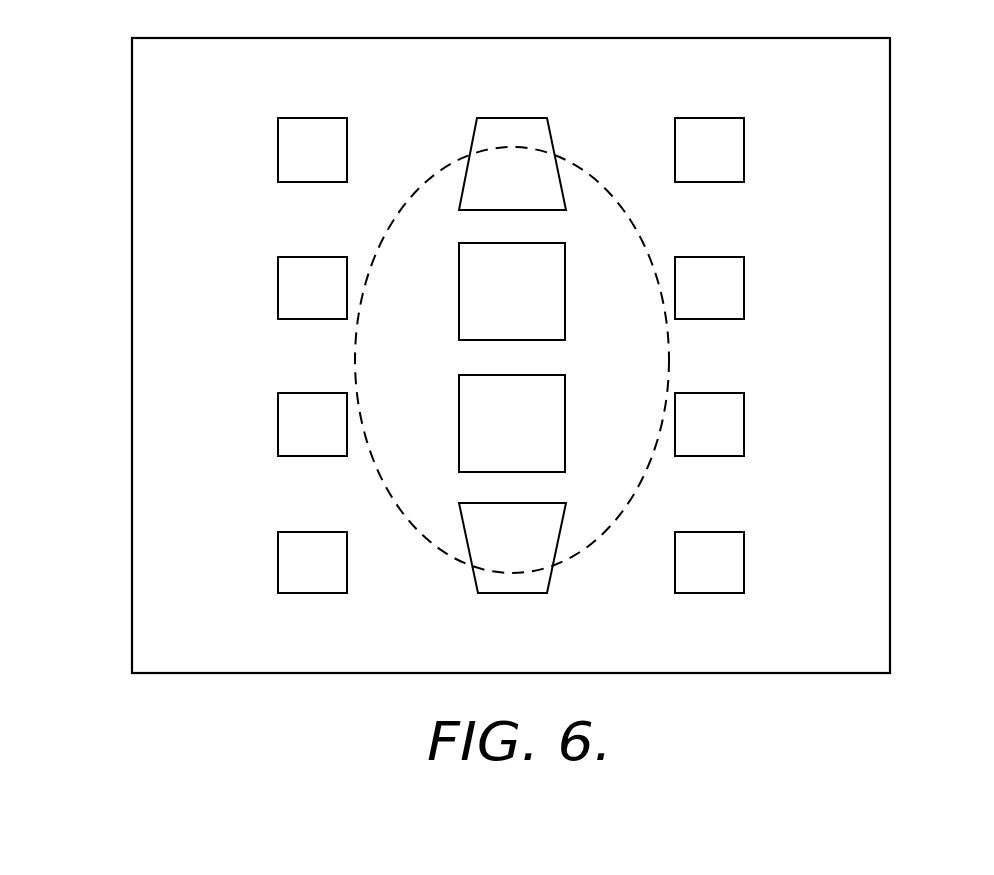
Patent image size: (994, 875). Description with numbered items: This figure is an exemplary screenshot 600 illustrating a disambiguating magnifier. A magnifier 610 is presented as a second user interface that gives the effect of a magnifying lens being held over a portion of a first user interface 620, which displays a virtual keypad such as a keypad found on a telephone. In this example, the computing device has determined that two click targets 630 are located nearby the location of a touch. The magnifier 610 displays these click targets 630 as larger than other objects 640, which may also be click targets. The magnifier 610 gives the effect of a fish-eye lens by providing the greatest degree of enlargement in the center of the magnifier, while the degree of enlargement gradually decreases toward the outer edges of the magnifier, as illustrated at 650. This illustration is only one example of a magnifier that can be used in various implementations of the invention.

The keypad 600 is at (98, 208).
The magnifier 610 is at (602, 180).
The first user interface 620 is at (132, 512).
The click targets 630 is at (565, 322).
The other objects 640 is at (311, 118).
The decreasing degree of enlargement 650 is at (473, 183).